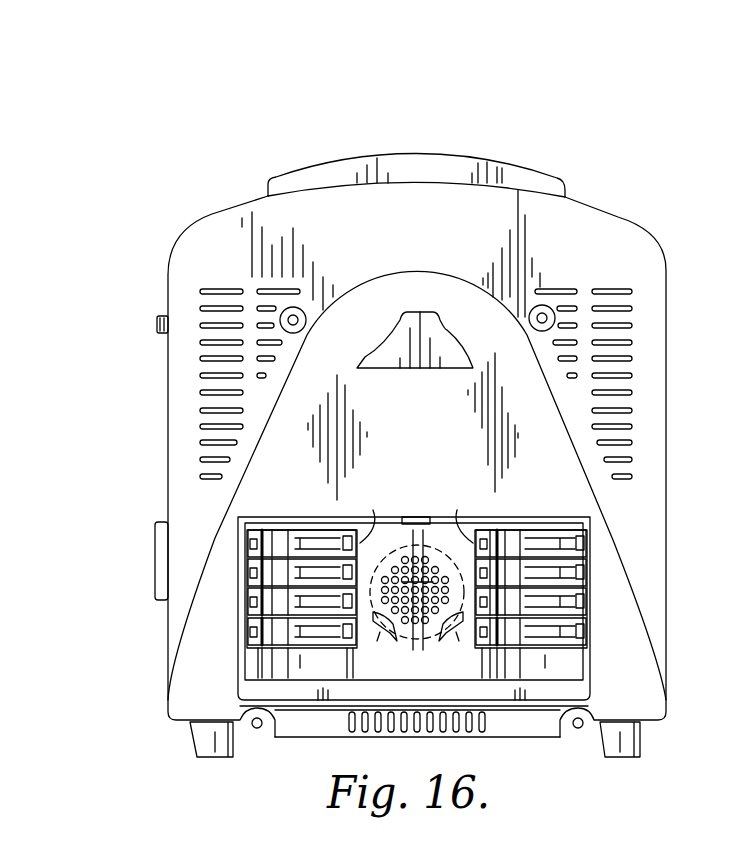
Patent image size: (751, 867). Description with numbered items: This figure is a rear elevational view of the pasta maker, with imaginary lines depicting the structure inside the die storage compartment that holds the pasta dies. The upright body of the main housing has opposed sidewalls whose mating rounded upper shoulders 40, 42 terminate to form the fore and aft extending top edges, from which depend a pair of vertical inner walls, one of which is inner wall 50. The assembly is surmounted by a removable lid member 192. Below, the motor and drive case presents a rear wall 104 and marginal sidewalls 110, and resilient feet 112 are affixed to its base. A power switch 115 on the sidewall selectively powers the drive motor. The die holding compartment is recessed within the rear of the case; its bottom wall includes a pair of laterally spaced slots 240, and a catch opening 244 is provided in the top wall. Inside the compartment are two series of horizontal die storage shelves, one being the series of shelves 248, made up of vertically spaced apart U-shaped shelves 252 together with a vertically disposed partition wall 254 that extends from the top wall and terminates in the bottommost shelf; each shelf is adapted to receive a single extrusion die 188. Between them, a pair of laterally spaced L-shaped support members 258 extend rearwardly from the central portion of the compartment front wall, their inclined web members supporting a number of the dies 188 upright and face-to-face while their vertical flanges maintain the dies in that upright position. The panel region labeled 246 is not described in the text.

The rounded upper shoulder 40 is at (617, 215).
The rounded upper shoulder 42 is at (205, 218).
The vertical inner wall 50 is at (235, 628).
The rear wall 104 is at (450, 403).
The marginal sidewalls 110 is at (168, 422).
The resilient feet 112 is at (205, 746).
The power switch 115 is at (158, 320).
The extrusion die 188 is at (383, 530).
The lid member 192 is at (455, 130).
The slots 240 is at (307, 692).
The catch opening 244 is at (410, 515).
The rear panel 246 is at (507, 521).
The die storage shelves 248 is at (595, 628).
The shelves 252 is at (250, 583).
The partition wall 254 is at (412, 512).
The L-shaped support members 258 is at (445, 665).